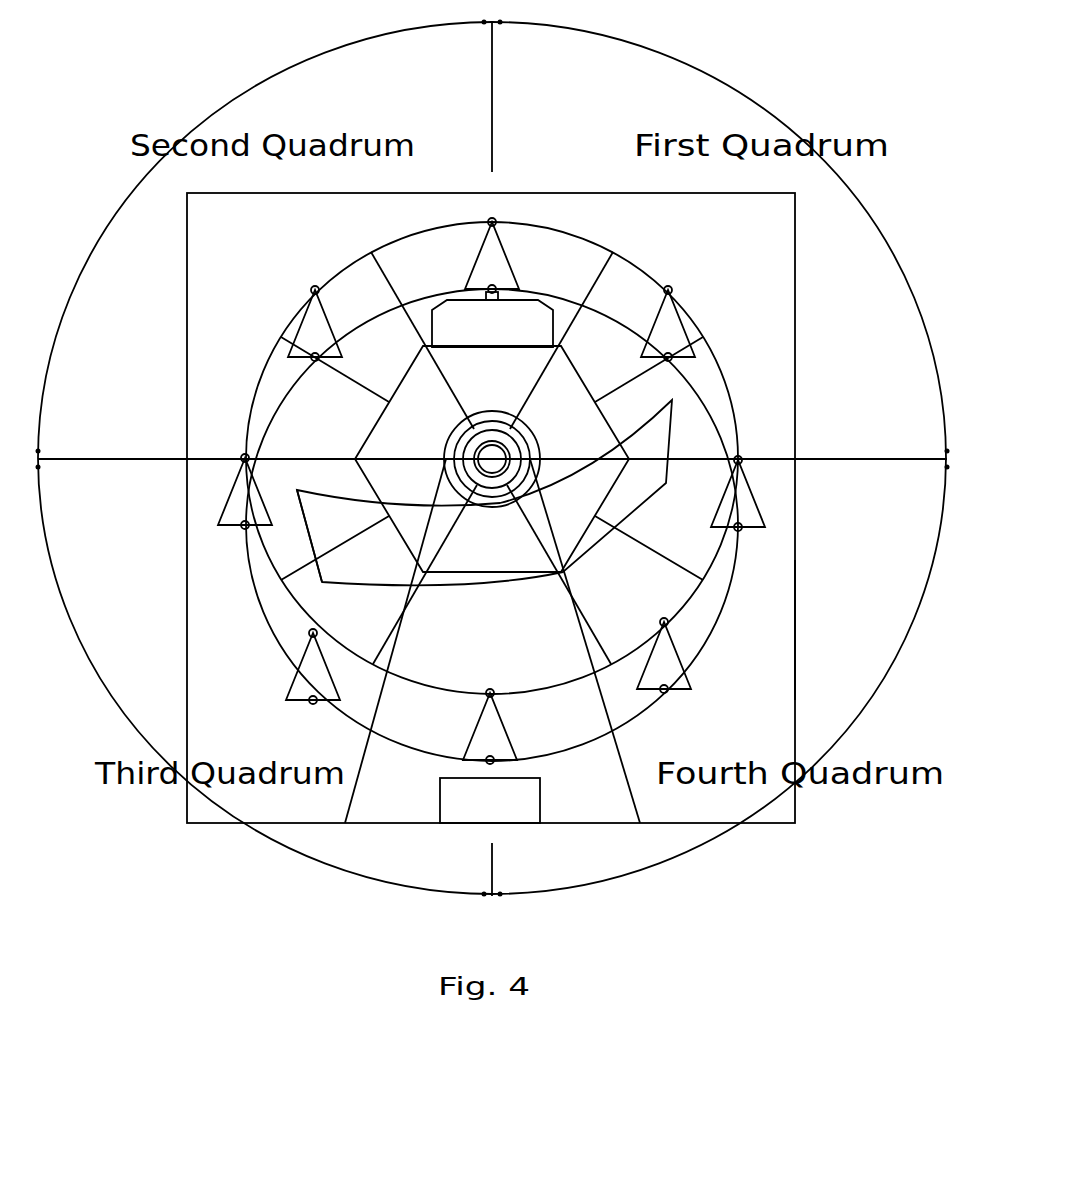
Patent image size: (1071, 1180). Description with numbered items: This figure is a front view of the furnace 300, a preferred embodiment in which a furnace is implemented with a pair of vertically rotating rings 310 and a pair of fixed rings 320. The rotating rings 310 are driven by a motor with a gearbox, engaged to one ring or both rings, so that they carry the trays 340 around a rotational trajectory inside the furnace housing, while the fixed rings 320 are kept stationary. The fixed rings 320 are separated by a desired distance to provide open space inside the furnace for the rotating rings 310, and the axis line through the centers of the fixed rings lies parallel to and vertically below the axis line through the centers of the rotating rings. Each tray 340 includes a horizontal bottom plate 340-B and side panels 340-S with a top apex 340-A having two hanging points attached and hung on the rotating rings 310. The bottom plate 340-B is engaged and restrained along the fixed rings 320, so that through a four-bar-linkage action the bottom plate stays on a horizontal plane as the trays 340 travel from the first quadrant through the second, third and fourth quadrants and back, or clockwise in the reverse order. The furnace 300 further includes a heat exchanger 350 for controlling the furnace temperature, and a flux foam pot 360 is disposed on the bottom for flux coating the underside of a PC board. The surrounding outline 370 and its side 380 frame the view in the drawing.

The furnace 300 is at (680, 86).
The vertically rotating rings 310 is at (316, 584).
The fixed ring 320 is at (316, 703).
The trays 340 is at (674, 336).
The top apex 340-A is at (659, 622).
The horizontal bottom plate 340-B is at (666, 693).
The side panels 340-S is at (604, 688).
The heat exchanger 350 is at (655, 440).
The flux foam pot 360 is at (505, 808).
The square frame 370 is at (531, 192).
The frame side edge 380 is at (794, 648).